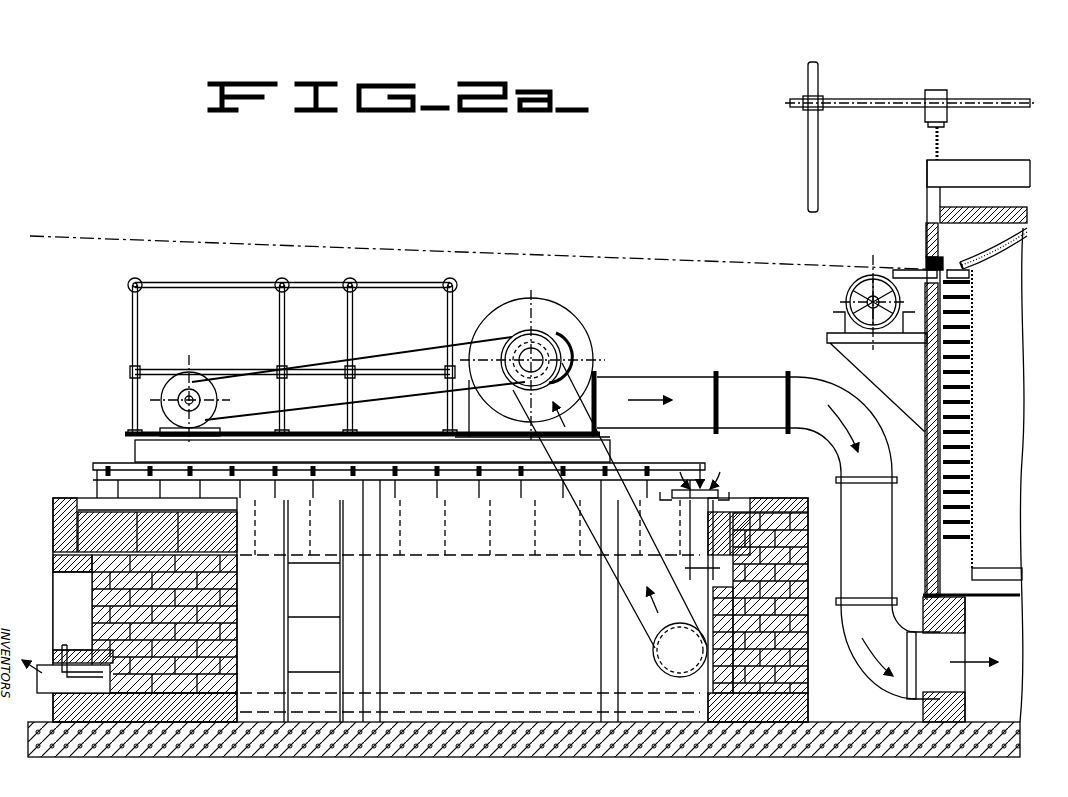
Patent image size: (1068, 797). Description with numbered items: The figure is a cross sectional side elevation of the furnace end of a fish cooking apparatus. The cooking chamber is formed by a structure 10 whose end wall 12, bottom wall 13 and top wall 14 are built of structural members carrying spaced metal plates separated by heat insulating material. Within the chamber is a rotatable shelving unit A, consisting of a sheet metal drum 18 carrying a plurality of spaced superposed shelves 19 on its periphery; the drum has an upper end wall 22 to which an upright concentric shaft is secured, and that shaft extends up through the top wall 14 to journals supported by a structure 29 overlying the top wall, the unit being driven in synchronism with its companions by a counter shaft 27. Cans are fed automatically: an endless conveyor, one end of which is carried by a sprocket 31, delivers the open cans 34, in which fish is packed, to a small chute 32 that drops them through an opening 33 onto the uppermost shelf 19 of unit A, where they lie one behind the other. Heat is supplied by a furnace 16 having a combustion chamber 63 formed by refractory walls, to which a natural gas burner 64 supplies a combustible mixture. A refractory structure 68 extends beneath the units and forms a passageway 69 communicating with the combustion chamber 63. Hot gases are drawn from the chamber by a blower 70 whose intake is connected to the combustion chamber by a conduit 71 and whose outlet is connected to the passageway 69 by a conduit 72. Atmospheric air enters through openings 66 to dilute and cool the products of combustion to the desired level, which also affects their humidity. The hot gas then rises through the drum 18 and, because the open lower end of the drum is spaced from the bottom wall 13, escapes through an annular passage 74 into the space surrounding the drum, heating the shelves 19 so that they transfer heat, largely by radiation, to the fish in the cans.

The structure 10 is at (924, 227).
The end wall 12 is at (926, 244).
The bottom wall 13 is at (1008, 597).
The top wall 14 is at (972, 214).
The furnace 16 is at (90, 492).
The drum 18 is at (1020, 420).
The shelves 19 is at (962, 363).
The upper end wall 22 is at (1028, 237).
The counter shaft 27 is at (876, 104).
The structure 29 is at (968, 166).
The sprocket 31 is at (886, 330).
The chute 32 is at (900, 278).
The opening 33 is at (942, 270).
The open cans 34 is at (870, 272).
The combustion chamber 63 is at (232, 604).
The natural gas burner 64 is at (60, 672).
The openings 66 is at (713, 490).
The refractory structure 68 is at (1016, 738).
The passageway 69 is at (1010, 688).
The blowers 70 is at (560, 328).
The conduits 71 is at (612, 562).
The conduit 72 is at (652, 386).
The annular passage 74 is at (985, 578).
The unit A is at (992, 252).